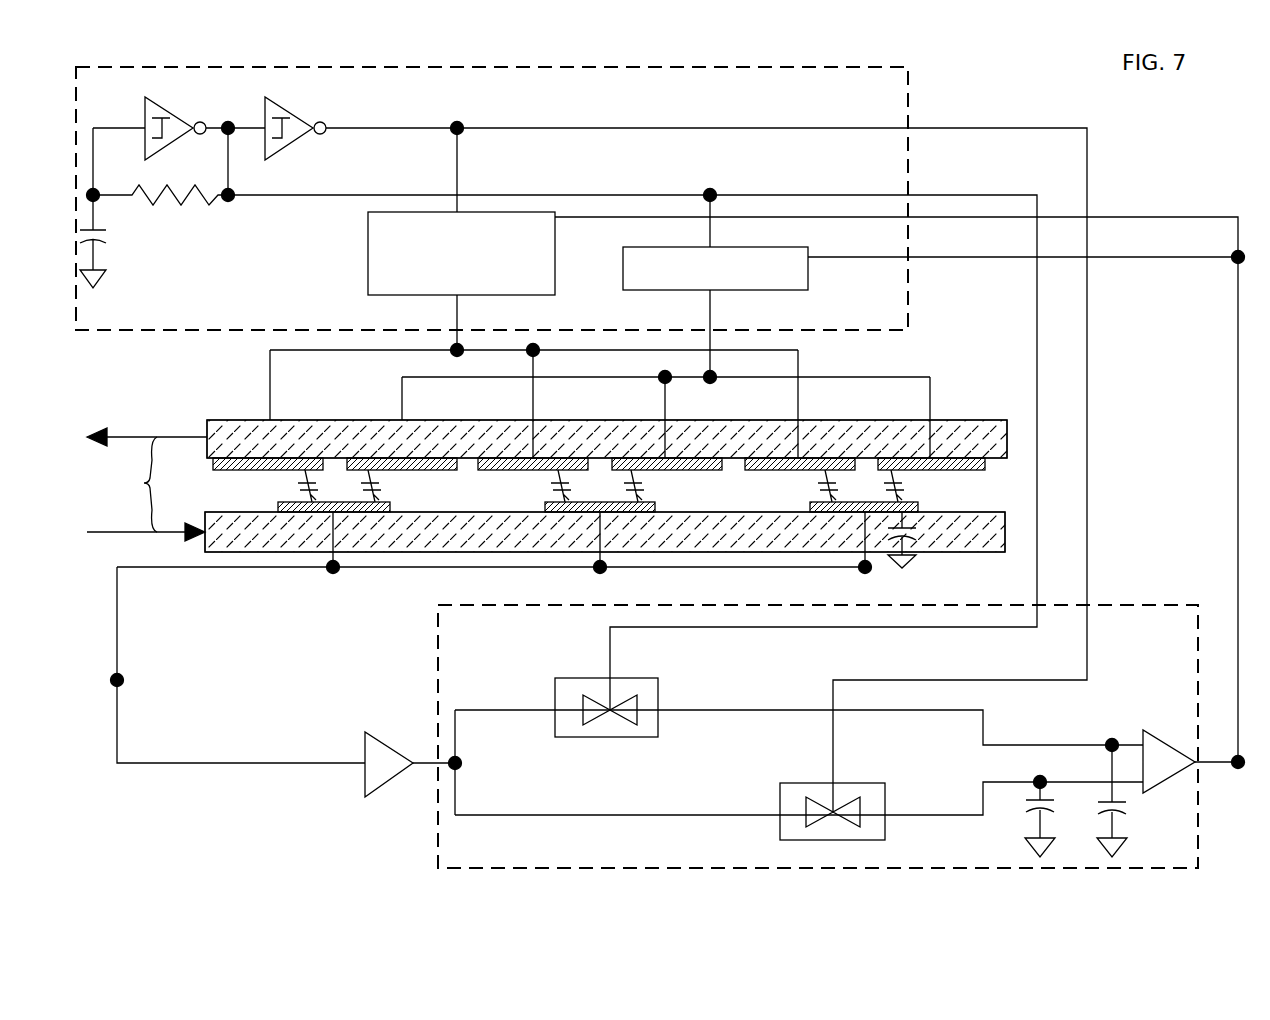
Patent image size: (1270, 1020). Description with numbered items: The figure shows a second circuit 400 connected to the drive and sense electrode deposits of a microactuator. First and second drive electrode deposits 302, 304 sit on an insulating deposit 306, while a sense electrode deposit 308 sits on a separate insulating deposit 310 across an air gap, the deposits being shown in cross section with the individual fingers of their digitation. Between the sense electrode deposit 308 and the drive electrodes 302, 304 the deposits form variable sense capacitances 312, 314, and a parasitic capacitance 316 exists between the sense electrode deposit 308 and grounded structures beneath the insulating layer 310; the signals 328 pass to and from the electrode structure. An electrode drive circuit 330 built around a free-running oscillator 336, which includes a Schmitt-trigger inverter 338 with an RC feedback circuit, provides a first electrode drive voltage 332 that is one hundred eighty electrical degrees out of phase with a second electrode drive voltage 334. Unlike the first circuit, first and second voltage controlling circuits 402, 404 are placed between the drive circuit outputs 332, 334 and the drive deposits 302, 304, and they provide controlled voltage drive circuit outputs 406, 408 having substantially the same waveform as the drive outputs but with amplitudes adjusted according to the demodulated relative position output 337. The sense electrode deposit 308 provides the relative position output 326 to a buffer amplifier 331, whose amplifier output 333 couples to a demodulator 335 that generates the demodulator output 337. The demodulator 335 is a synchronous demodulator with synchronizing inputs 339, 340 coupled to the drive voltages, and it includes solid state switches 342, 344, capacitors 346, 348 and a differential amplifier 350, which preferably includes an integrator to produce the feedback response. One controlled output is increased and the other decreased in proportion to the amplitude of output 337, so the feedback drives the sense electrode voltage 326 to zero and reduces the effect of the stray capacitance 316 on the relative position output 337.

The drive electrode deposit 302 is at (245, 460).
The drive electrode deposit 304 is at (428, 462).
The insulating deposit 306 is at (330, 440).
The sense electrode deposit 308 is at (330, 507).
The insulating deposit 310 is at (238, 540).
The variable sense capacitance 312 is at (298, 486).
The variable sense capacitance 314 is at (385, 486).
The parasitic capacitance 316 is at (915, 530).
The relative position output 326 is at (124, 682).
The input/output signals 328 is at (147, 484).
The electrode drive circuit 330 is at (908, 78).
The buffer amplifier 331 is at (385, 740).
The first electrode drive voltage 332 is at (485, 130).
The amplifier output 333 is at (420, 770).
The second electrode drive voltage 334 is at (705, 192).
The demodulator 335 is at (437, 648).
The free-running oscillator 336 is at (240, 232).
The demodulator output 337 is at (1238, 770).
The Schmitt-trigger inverter 338 is at (178, 115).
The synchronizing input 339 is at (1090, 540).
The synchronizing input 340 is at (1040, 448).
The solid state switch 342 is at (640, 680).
The solid state switch 344 is at (812, 783).
The capacitor 346 is at (1035, 808).
The capacitor 348 is at (1120, 810).
The differential amplifier 350 is at (1170, 740).
The second circuit 400 is at (1145, 137).
The first voltage controlling circuit 402 is at (806, 445).
The second voltage controlling circuit 404 is at (930, 242).
The controlled voltage drive circuit output 406 is at (460, 315).
The controlled voltage drive circuit output 408 is at (718, 315).